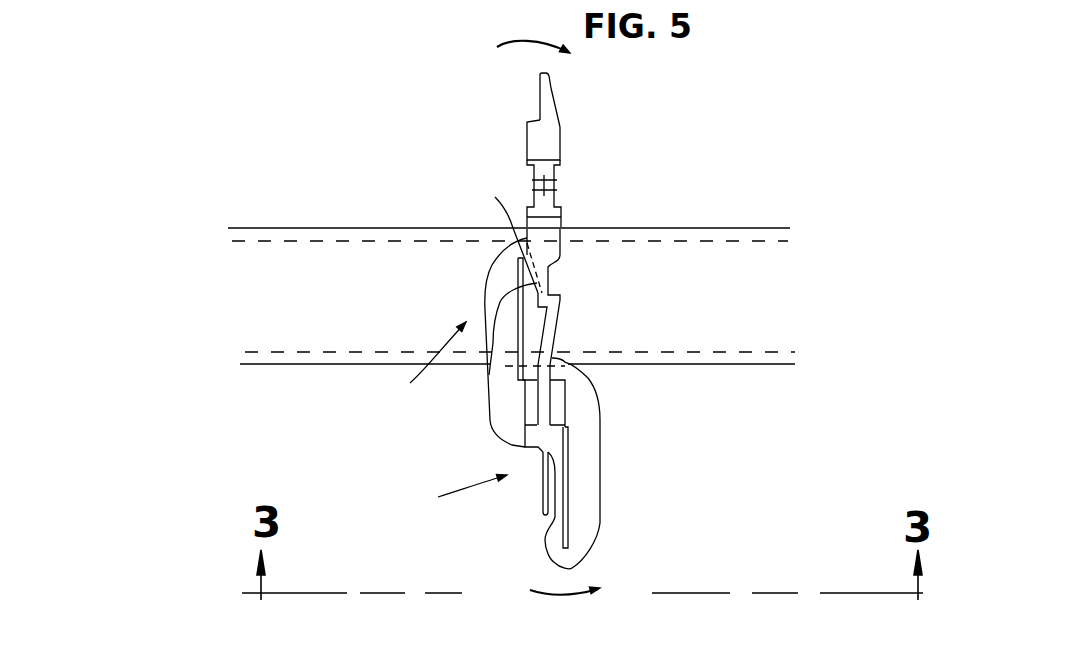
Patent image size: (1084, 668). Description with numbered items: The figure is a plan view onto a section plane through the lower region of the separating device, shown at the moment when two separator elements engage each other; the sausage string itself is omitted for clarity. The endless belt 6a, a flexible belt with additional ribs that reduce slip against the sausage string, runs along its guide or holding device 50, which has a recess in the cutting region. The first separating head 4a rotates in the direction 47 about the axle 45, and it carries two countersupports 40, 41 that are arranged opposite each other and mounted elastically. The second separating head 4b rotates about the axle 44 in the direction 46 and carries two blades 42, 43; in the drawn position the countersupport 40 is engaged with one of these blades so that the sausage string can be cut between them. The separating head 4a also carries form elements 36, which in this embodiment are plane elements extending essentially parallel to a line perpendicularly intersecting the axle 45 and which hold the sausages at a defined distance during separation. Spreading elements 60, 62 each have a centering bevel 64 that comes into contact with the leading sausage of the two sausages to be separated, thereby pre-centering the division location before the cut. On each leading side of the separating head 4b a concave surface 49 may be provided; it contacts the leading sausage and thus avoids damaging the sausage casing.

The separating head 4a is at (456, 491).
The second separating head 4b is at (534, 181).
The endless belt 6a is at (707, 262).
The form element 36 is at (518, 337).
The countersupport 40 is at (573, 374).
The countersupport 41 is at (543, 516).
The blade 42 is at (558, 287).
The blade 43 is at (544, 82).
The axle 44 is at (552, 187).
The axle 45 is at (547, 403).
The direction of rotation 46 is at (500, 47).
The direction of rotation 47 is at (563, 593).
The concave surface 49 is at (553, 105).
The holding device 50 is at (770, 228).
The spreading element 60 is at (640, 458).
The spreading element 62 is at (423, 362).
The centering bevel 64 is at (495, 287).